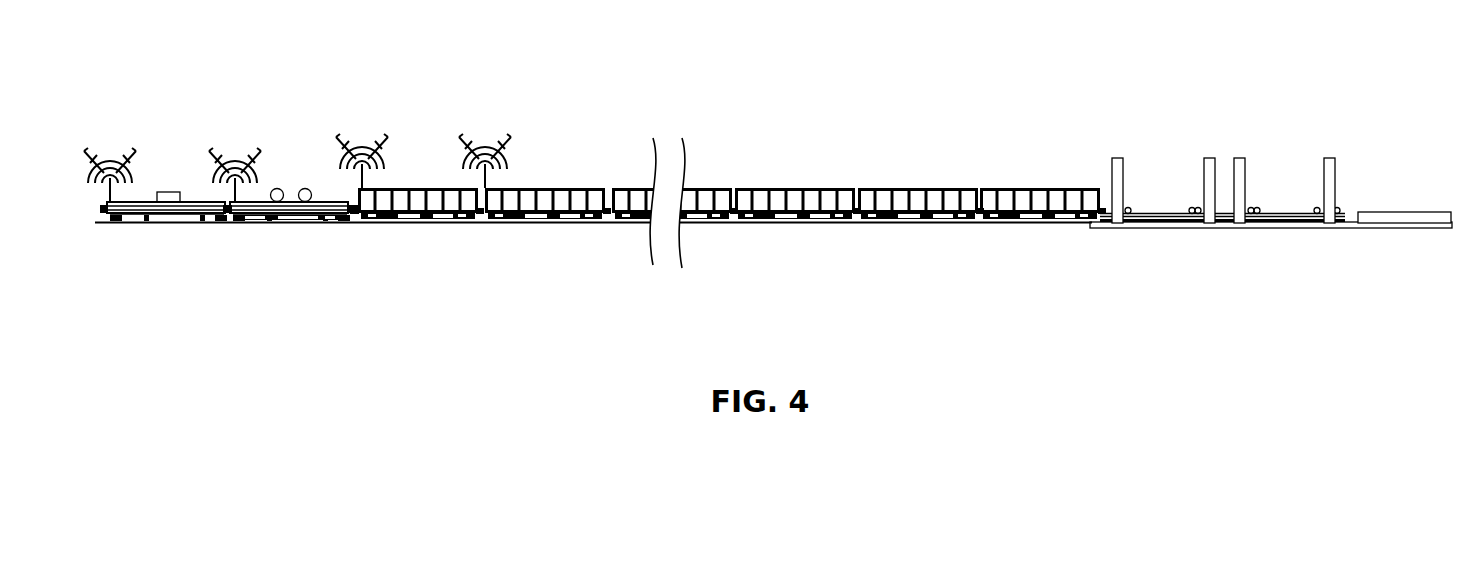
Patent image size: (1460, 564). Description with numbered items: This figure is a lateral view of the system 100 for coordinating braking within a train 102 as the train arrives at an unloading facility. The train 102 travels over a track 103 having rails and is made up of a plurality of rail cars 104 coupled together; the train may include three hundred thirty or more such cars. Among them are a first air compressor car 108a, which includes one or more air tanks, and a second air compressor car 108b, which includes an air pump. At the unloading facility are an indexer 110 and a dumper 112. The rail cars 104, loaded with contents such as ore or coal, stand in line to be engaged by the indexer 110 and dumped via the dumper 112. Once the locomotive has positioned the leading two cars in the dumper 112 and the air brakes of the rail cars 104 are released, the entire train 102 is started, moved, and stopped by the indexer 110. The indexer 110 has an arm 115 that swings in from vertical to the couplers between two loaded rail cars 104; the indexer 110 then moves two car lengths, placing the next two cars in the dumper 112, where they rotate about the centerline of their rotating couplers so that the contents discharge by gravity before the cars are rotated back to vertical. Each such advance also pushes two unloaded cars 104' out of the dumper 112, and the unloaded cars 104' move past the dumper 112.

The system 100 is at (180, 96).
The train 102 is at (506, 48).
The track 103 is at (297, 222).
The rail cars 104 is at (721, 197).
The unloaded cars 104' is at (1404, 183).
The first air compressor car 108a is at (280, 221).
The second air compressor car 108b is at (163, 221).
The indexer 110 is at (1118, 158).
The dumper 112 is at (1280, 211).
The arm 115 is at (1125, 178).